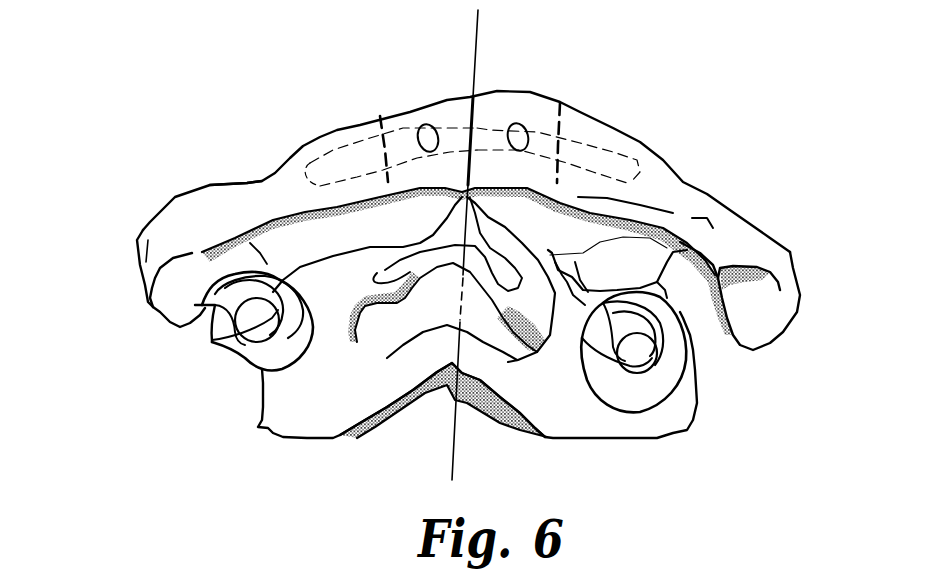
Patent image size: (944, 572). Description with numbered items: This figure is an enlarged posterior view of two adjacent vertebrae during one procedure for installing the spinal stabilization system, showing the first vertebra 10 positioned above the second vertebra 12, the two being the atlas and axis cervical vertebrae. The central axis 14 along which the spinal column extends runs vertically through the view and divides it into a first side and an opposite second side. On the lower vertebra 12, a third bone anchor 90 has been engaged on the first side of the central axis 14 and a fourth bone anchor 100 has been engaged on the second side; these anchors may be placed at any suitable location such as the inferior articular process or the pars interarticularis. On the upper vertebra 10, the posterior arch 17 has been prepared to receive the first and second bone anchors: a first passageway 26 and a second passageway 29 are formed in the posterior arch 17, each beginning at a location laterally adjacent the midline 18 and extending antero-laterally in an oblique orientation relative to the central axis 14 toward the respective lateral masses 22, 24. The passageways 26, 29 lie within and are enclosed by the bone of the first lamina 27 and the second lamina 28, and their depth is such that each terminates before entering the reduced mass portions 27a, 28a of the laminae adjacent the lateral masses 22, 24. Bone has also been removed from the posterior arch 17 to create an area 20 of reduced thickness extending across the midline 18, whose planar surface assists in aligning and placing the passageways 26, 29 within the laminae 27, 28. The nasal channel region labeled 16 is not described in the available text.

The first vertebra 10 is at (128, 254).
The second vertebra 12 is at (254, 408).
The central axis 14 is at (482, 30).
The nasal channel 16 is at (430, 238).
The posterior arch 17 is at (470, 96).
The midline 18 is at (468, 150).
The area of reduced thickness 20 is at (500, 120).
The lateral mass 22 is at (141, 236).
The lateral mass 24 is at (790, 262).
The first passageway 26 is at (340, 148).
The first lamina 27 is at (295, 162).
The reduced mass portion 27a is at (245, 180).
The second lamina 28 is at (600, 157).
The reduced mass portion 28a is at (727, 205).
The second passageway 29 is at (647, 129).
The third bone anchor 90 is at (196, 350).
The fourth bone anchor 100 is at (680, 394).